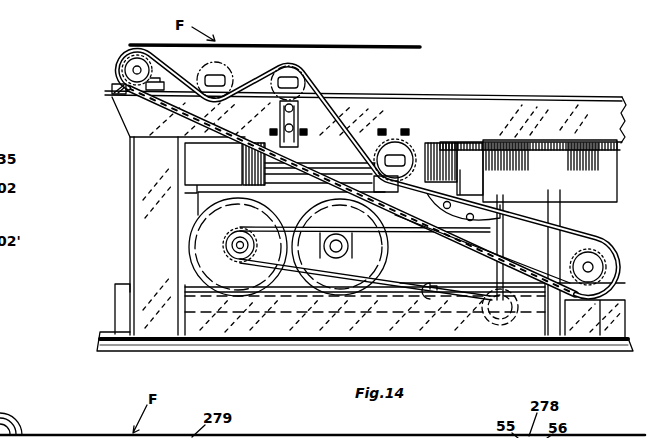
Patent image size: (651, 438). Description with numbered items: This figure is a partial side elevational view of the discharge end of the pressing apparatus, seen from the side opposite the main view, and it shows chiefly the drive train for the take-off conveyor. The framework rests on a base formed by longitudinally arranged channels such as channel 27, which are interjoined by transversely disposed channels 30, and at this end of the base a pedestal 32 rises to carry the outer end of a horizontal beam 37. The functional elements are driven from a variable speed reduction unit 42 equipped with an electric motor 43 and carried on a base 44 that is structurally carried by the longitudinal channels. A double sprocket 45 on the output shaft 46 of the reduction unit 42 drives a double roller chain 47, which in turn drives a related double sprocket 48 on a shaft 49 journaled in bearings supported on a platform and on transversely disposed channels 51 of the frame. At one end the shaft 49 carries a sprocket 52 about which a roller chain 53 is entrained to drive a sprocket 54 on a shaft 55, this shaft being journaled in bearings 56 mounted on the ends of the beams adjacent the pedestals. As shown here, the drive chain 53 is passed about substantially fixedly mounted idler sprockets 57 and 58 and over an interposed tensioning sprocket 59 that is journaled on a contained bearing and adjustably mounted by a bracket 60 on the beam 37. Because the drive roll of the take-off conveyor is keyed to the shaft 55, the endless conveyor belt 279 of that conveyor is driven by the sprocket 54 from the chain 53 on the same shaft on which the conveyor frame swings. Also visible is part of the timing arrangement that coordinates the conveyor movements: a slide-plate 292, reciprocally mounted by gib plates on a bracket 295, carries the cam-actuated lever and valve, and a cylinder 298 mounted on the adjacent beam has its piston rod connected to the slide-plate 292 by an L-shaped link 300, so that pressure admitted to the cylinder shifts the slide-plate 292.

The longitudinally arranged channel 27 is at (320, 324).
The transversely disposed channel 30 is at (140, 305).
The pedestal 32 is at (147, 200).
The beam 37 is at (400, 117).
The variable speed reduction unit 42 is at (206, 252).
The electric motor 43 is at (393, 258).
The base 44 is at (295, 322).
The double sprocket 45 is at (230, 244).
The output shaft 46 is at (241, 239).
The double roller chain 47 is at (430, 236).
The double sprocket 48 is at (586, 250).
The shaft 49 is at (591, 264).
The transversely disposed channel 51 is at (582, 347).
The sprocket 52 is at (567, 290).
The roller chain 53 is at (349, 142).
The sprocket 54 is at (125, 63).
The shaft 55 is at (113, 93).
The bearing 56 is at (113, 83).
The idler sprocket 57 is at (418, 148).
The idler sprocket 58 is at (219, 85).
The tensioning sprocket 59 is at (303, 101).
The bracket 60 is at (300, 110).
The endless conveyor belt 279 is at (340, 46).
The slide-plate 292 is at (480, 147).
The bracket 295 is at (517, 183).
The cylinder 298 is at (287, 172).
The L-shaped link 300 is at (443, 150).